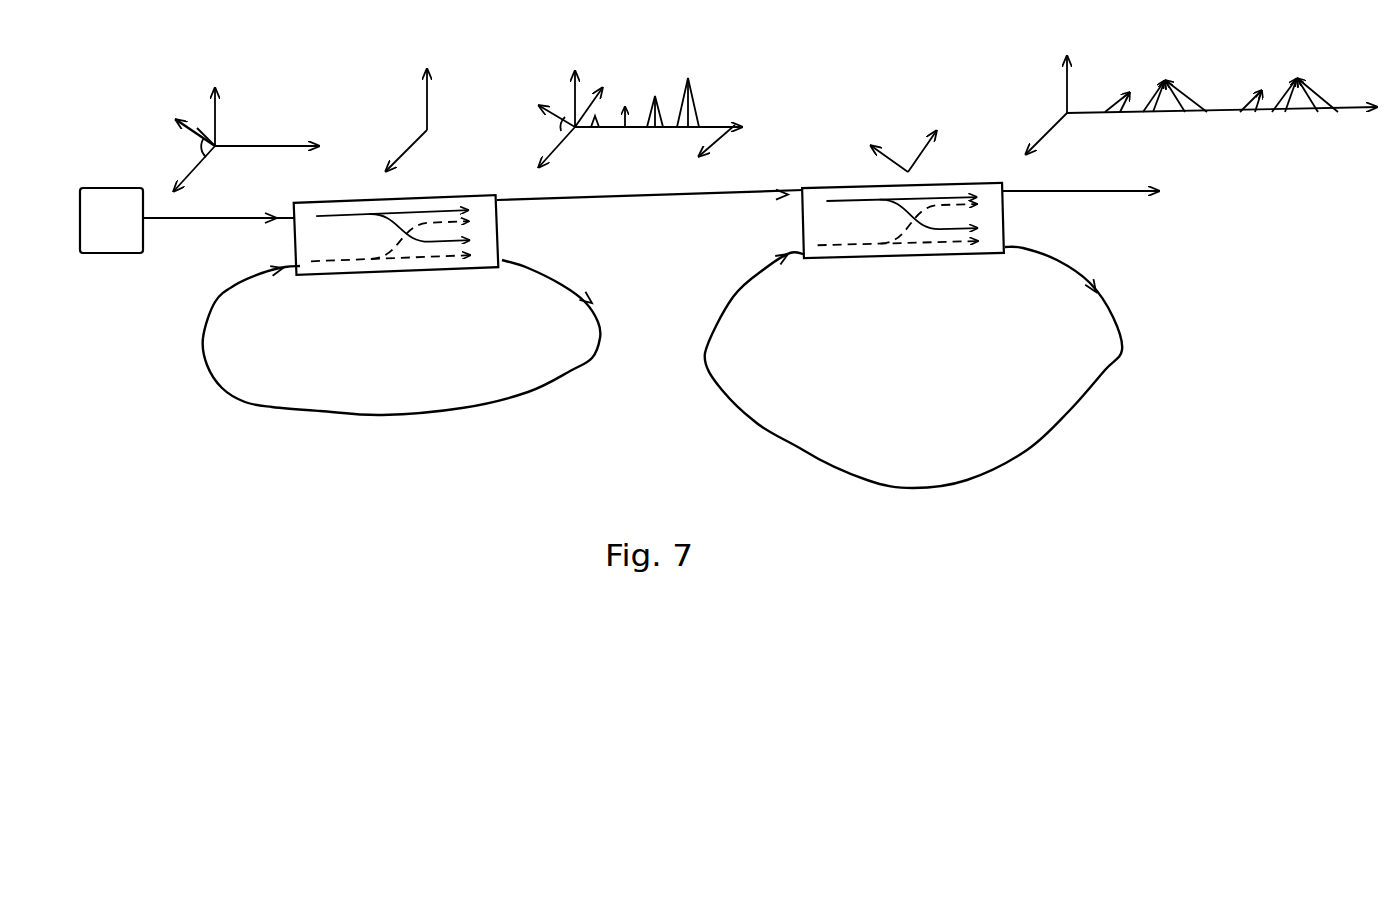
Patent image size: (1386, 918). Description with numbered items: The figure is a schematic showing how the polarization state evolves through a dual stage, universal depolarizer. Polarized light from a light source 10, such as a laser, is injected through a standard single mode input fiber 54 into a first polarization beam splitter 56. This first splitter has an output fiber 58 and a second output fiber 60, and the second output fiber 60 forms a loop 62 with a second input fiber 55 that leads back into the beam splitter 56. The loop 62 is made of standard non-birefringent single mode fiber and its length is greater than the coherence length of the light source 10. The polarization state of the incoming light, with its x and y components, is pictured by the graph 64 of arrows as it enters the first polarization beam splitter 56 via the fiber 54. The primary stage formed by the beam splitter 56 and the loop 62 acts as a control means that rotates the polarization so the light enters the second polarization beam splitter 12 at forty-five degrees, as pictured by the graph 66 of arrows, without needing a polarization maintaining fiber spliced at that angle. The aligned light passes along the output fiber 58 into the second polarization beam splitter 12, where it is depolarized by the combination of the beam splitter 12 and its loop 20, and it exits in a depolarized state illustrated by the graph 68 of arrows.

The light source 10 is at (103, 202).
The second polarization beam splitter 12 is at (938, 170).
The loop 20 is at (915, 500).
The SM input fiber 54 is at (200, 218).
The second input fiber 55 is at (235, 297).
The first polarization beam splitter 56 is at (433, 183).
The output fiber 58 is at (618, 200).
The second output fiber 60 is at (560, 271).
The loop 62 is at (422, 430).
The graph of arrows 64 is at (256, 115).
The graph of arrows 66 is at (735, 92).
The graph of arrows 68 is at (1267, 48).